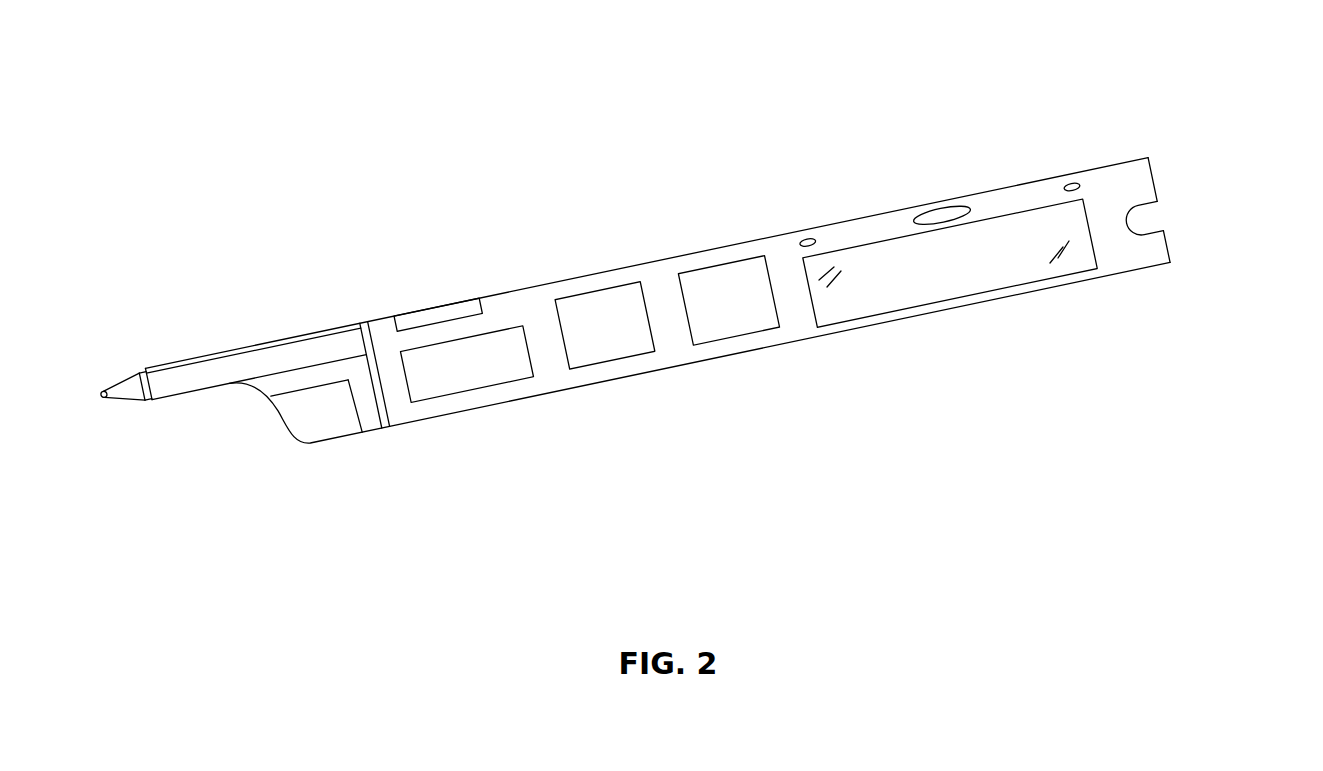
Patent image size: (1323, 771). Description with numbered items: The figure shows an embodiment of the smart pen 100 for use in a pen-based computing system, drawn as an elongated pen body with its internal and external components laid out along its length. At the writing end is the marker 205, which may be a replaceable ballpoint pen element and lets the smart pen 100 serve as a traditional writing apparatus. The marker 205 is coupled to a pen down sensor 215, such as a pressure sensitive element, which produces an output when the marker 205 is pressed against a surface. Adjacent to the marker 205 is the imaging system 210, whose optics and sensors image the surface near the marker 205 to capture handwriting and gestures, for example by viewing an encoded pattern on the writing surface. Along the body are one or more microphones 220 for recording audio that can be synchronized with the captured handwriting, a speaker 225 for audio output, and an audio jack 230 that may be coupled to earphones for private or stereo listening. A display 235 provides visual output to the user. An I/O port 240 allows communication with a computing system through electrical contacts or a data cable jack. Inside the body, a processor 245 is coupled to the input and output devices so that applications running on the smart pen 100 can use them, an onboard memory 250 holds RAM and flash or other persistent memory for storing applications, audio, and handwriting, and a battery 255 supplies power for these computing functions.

The smart pen 100 is at (541, 88).
The marker 205 is at (103, 392).
The imaging system 210 is at (341, 427).
The pen down sensor 215 is at (387, 427).
The microphones 220 is at (810, 239).
The speaker 225 is at (944, 211).
The audio jack 230 is at (1155, 213).
The display 235 is at (992, 275).
The I/O port 240 is at (457, 303).
The processor 245 is at (707, 315).
The onboard memory 250 is at (587, 342).
The battery 255 is at (444, 378).